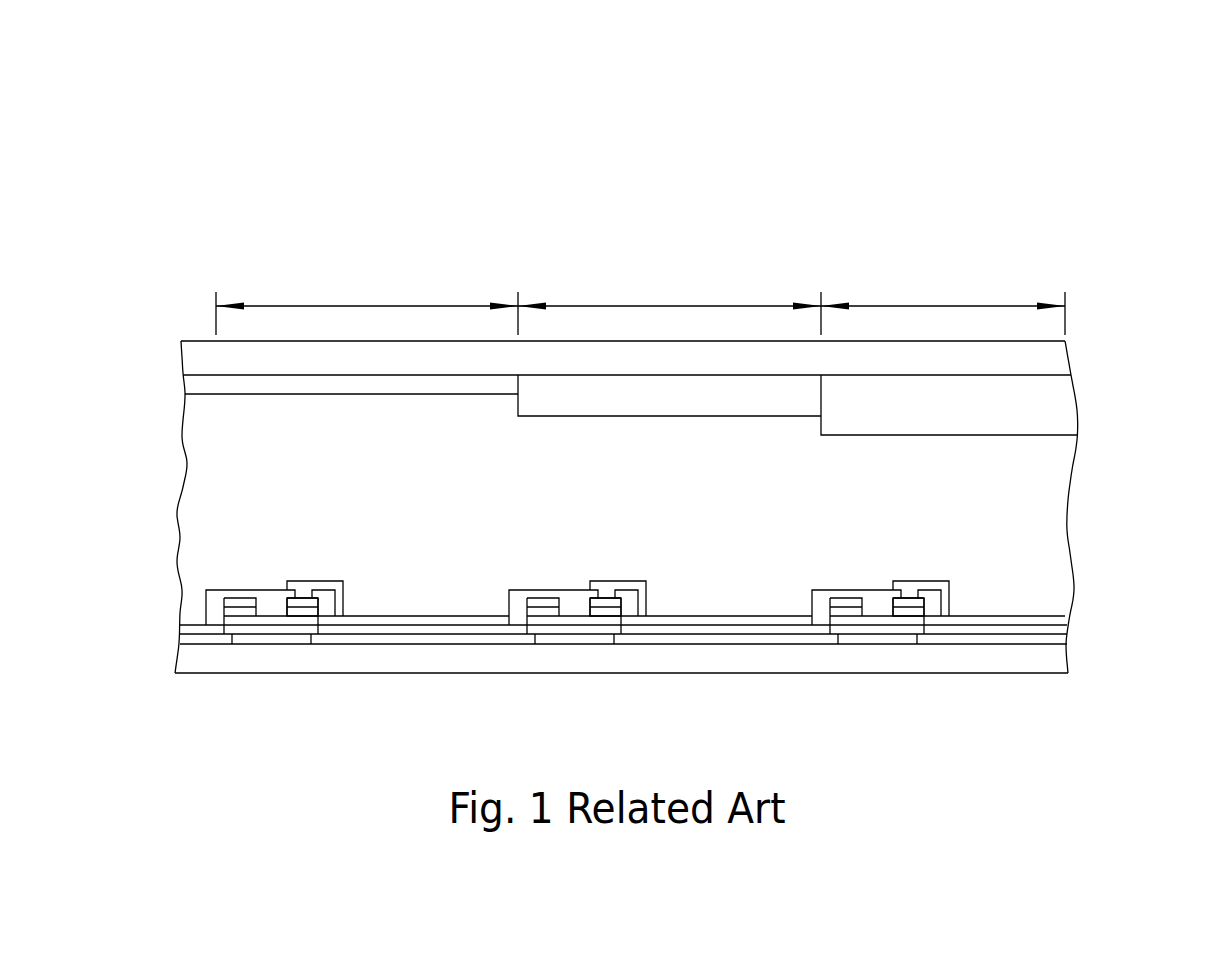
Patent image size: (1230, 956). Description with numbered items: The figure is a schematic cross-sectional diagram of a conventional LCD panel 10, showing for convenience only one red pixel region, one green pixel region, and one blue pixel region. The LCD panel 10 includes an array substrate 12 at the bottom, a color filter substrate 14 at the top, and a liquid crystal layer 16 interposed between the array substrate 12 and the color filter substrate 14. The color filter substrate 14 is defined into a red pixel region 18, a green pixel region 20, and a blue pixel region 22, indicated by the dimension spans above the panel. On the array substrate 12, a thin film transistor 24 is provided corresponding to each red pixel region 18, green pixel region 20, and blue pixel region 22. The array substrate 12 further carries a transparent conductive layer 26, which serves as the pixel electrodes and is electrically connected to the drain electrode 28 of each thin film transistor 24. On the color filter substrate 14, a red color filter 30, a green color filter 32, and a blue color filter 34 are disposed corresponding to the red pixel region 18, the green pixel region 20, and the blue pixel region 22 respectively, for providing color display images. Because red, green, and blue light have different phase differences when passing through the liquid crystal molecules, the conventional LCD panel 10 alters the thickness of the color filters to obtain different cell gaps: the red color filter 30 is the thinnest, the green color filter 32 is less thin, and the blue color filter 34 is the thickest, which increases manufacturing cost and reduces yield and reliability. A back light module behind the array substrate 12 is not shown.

The LCD panel 10 is at (1112, 128).
The array substrate 12 is at (618, 664).
The color filter substrate 14 is at (649, 370).
The liquid crystal layer 16 is at (177, 513).
The red pixel region 18 is at (367, 304).
The green pixel region 20 is at (669, 304).
The blue pixel region 22 is at (943, 304).
The thin film transistor 24 is at (278, 542).
The transparent conductive layer 26 is at (325, 580).
The drain electrode 28 is at (308, 603).
The red color filter 30 is at (319, 388).
The green color filter 32 is at (649, 410).
The blue color filter 34 is at (937, 418).